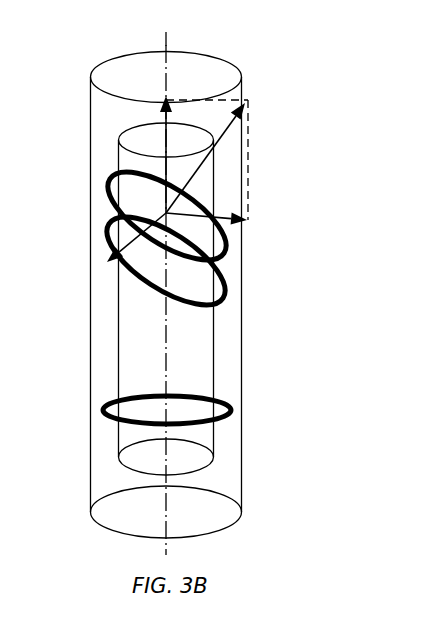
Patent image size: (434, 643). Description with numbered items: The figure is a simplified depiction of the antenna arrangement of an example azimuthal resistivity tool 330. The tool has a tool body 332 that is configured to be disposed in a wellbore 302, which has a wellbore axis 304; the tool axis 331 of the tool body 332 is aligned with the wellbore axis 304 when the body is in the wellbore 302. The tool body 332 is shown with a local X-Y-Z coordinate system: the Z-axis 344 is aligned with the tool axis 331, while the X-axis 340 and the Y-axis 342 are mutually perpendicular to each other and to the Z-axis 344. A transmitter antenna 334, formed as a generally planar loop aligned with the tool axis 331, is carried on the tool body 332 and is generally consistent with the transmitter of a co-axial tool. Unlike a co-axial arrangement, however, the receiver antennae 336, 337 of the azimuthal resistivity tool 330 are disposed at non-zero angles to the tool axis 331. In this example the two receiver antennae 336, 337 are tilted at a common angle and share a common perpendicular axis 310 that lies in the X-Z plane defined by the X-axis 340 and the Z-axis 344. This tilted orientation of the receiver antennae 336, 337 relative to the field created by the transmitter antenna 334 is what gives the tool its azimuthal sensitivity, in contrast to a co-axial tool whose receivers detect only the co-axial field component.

The wellbore 302 is at (90, 475).
The wellbore axis 304 is at (234, 285).
The tool axis 331 is at (168, 43).
The common perpendicular axis 310 is at (205, 150).
The azimuthal resistivity tool 330 is at (128, 287).
The tool body 332 is at (118, 331).
The transmitter antenna 334 is at (103, 410).
The receiver antenna 336 is at (105, 226).
The receiver antenna 337 is at (107, 178).
The X-axis 340 is at (225, 228).
The Y-axis 342 is at (215, 292).
The Z-axis 344 is at (158, 114).